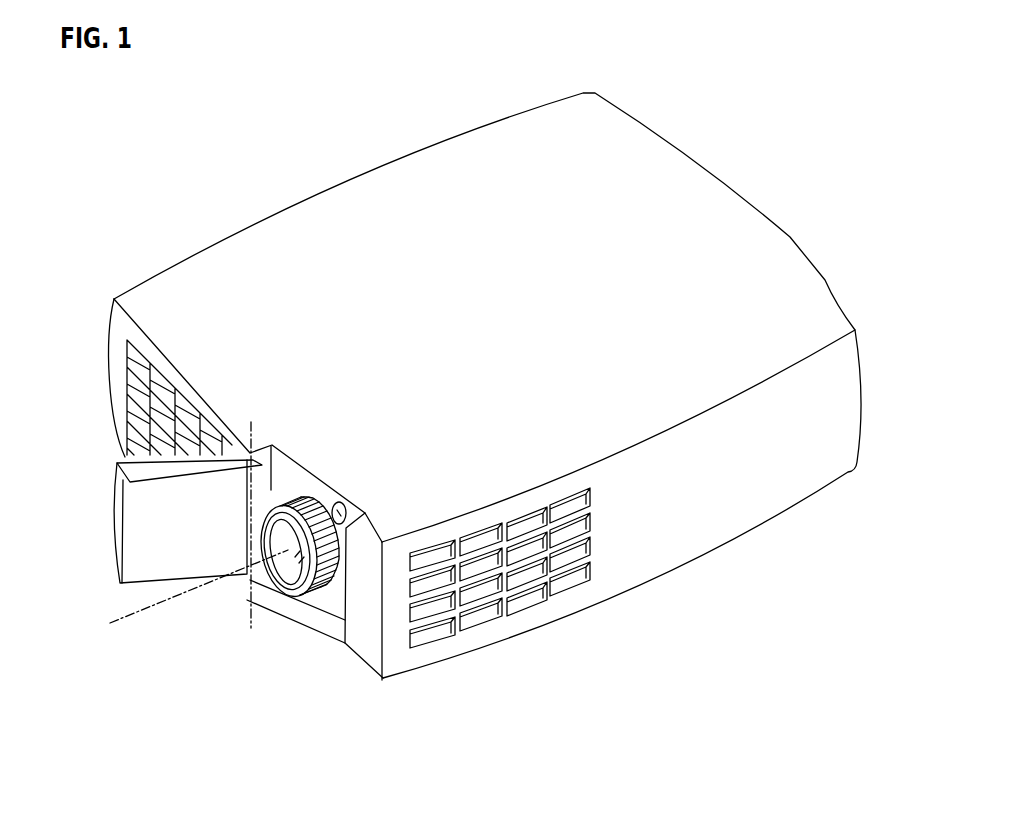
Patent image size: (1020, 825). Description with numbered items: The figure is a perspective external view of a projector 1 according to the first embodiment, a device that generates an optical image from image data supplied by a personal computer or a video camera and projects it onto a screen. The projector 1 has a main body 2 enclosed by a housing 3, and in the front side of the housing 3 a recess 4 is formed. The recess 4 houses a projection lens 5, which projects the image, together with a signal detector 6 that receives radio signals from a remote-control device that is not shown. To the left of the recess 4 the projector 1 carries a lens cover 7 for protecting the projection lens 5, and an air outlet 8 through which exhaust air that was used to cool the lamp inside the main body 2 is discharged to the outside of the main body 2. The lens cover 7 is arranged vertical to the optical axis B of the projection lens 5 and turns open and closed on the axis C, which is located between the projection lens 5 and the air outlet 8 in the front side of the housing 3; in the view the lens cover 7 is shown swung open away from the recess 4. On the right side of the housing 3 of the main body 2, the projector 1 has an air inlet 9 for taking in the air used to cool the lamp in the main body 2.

The projector 1 is at (683, 47).
The main body 2 is at (336, 182).
The housing 3 is at (223, 257).
The recess 4 is at (307, 608).
The projection lens 5 is at (322, 594).
The signal detector 6 is at (341, 526).
The lens cover 7 is at (153, 568).
The air outlet 8 is at (140, 340).
The air inlet 9 is at (568, 587).
The optical axis B is at (198, 586).
The axis C is at (251, 628).